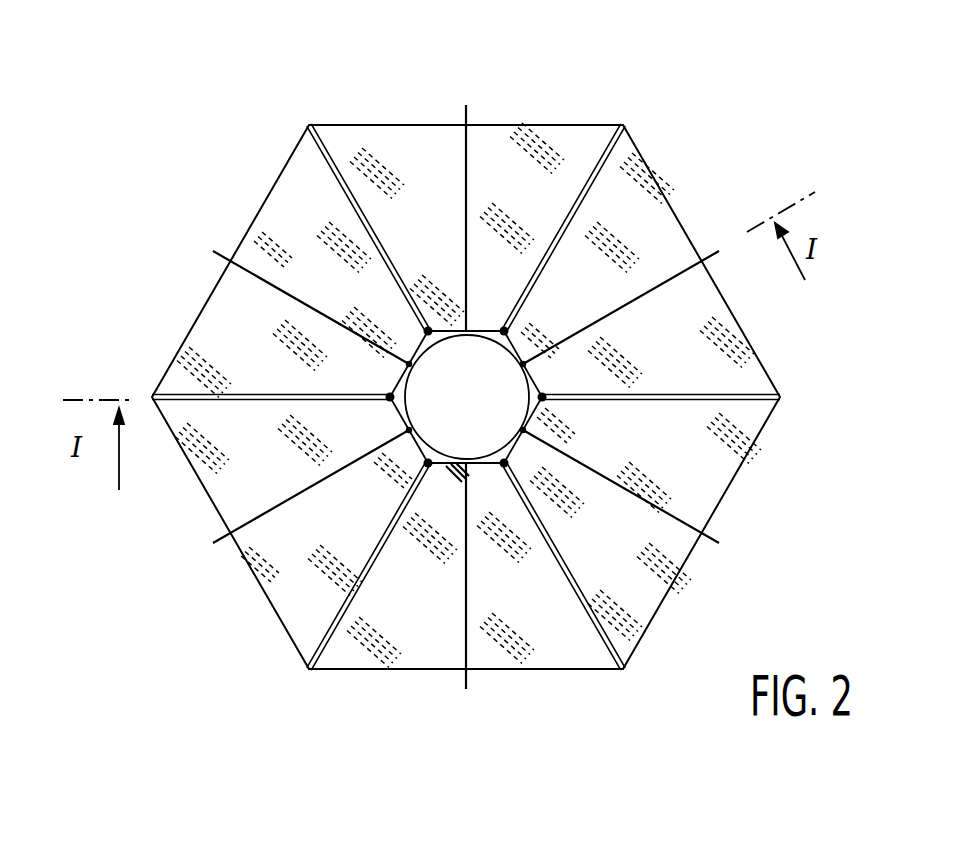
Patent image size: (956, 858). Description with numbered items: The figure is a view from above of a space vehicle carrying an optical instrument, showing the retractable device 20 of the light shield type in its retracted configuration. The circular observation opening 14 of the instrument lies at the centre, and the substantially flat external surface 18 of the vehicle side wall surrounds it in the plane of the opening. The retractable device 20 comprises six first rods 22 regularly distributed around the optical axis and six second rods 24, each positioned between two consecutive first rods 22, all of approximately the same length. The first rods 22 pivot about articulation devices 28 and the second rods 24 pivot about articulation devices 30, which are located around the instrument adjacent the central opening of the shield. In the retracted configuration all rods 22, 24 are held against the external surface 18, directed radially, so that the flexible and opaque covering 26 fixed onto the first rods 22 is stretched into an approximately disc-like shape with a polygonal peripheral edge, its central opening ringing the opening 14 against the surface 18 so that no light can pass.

The opening 14 is at (432, 345).
The external surface 18 is at (163, 131).
The retractable device 20 is at (704, 139).
The first rods 22 is at (326, 138).
The second rods 24 is at (471, 71).
The covering 26 is at (290, 597).
The articulation devices 28 is at (403, 408).
The articulation devices 30 is at (528, 365).